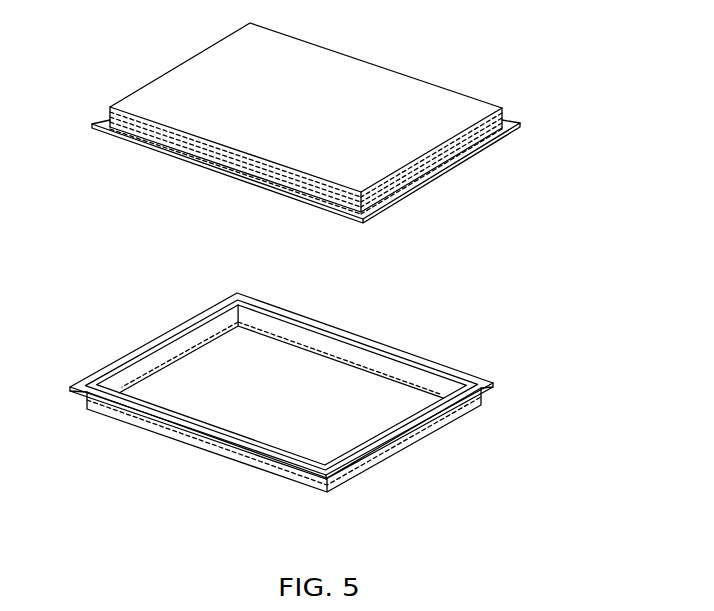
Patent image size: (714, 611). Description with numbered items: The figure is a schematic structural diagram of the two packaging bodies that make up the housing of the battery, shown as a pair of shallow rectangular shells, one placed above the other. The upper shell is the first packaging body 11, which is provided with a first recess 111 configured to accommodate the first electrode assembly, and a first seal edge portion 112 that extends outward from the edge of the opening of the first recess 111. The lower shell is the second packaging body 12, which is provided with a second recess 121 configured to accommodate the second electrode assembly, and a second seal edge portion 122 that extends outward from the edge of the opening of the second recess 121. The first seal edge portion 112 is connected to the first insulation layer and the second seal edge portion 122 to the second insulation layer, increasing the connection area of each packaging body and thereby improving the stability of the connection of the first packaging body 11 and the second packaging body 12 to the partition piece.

The first packaging body 11 is at (353, 72).
The first recess 111 is at (226, 177).
The first seal edge portion 112 is at (520, 127).
The second packaging body 12 is at (308, 482).
The second recess 121 is at (330, 372).
The second seal edge portion 122 is at (496, 389).